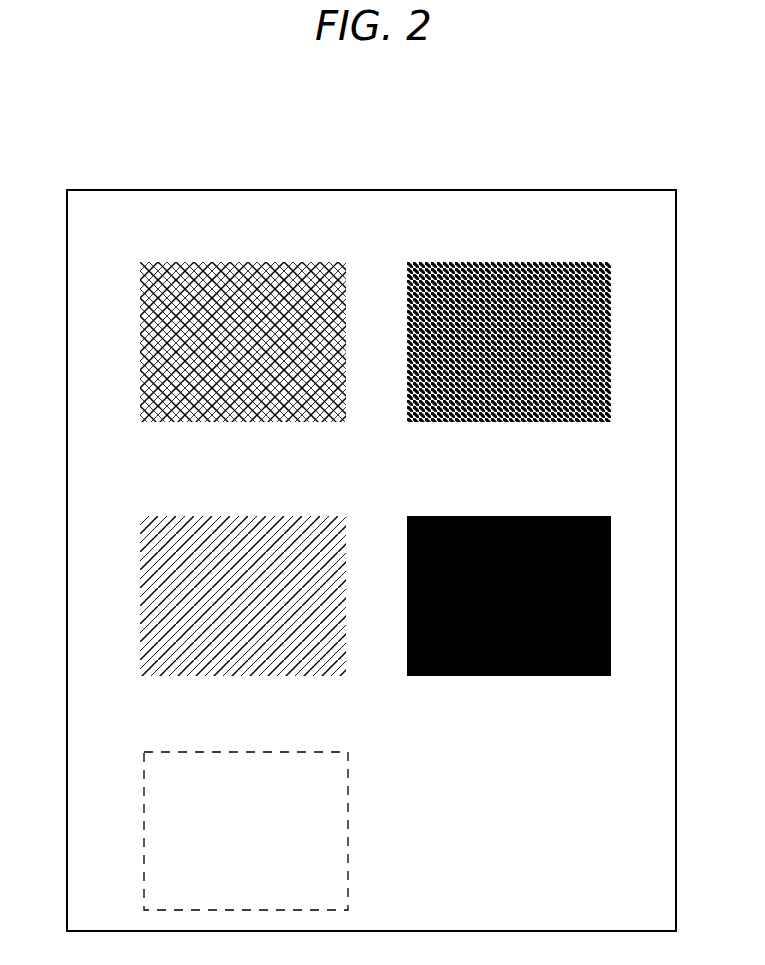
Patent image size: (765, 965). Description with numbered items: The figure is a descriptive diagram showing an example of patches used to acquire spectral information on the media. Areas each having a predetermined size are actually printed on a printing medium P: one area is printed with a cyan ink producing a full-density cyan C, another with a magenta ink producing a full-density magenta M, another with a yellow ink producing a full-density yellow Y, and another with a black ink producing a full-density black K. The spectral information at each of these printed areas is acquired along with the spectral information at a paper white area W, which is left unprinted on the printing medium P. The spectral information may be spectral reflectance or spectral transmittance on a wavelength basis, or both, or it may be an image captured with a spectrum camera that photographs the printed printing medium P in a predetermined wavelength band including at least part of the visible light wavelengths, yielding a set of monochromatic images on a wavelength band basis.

The printing medium P is at (373, 189).
The cyan patch C is at (243, 262).
The magenta patch M is at (509, 262).
The yellow patch Y is at (243, 516).
The black patch K is at (509, 516).
The paper white area W is at (284, 855).